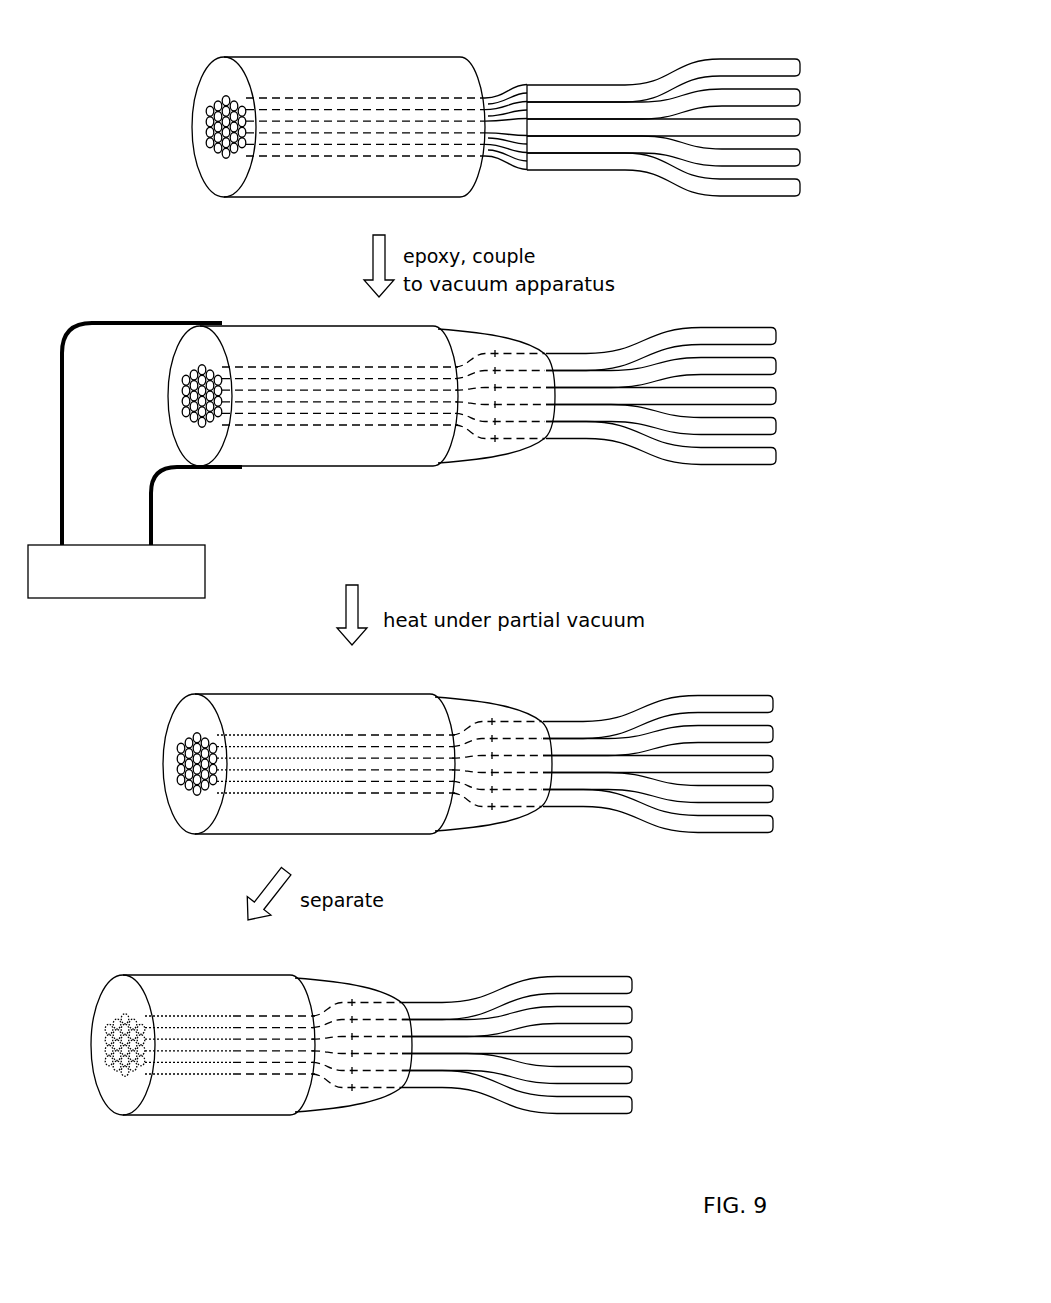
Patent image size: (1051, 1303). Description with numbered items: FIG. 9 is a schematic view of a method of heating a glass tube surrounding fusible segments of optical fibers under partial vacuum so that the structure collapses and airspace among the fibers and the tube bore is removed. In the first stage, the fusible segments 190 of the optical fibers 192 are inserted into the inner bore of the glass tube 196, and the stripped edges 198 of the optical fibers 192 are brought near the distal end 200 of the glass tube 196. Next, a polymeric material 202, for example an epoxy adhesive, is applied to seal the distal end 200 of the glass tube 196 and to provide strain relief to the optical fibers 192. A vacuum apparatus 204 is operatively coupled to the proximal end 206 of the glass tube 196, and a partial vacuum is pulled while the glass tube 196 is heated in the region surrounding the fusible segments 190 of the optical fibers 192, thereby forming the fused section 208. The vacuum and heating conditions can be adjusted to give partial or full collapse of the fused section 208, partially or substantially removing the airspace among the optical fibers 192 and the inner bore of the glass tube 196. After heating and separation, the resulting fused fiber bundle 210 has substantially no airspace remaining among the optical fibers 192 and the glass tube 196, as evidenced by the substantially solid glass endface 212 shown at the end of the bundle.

The fusible segments 190 is at (368, 205).
The optical fibers 192 is at (722, 98).
The glass tube 196 is at (262, 187).
The stripped edges 198 is at (530, 66).
The distal end 200 is at (476, 76).
The polymeric material 202 is at (480, 348).
The vacuum apparatus 204 is at (187, 570).
The proximal end 206 is at (228, 301).
The fused section 208 is at (340, 683).
The fused fiber bundle 210 is at (333, 1000).
The glass endface 212 is at (64, 1031).